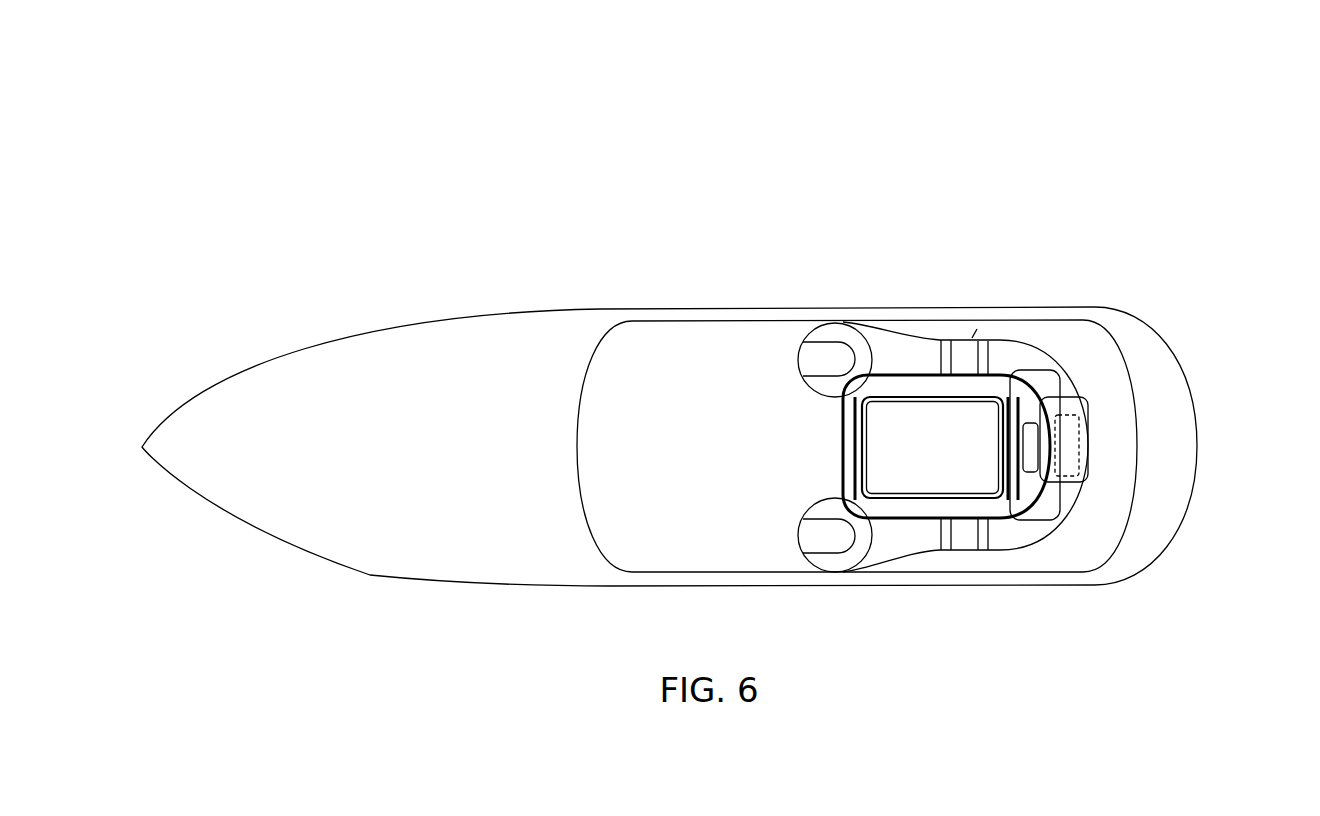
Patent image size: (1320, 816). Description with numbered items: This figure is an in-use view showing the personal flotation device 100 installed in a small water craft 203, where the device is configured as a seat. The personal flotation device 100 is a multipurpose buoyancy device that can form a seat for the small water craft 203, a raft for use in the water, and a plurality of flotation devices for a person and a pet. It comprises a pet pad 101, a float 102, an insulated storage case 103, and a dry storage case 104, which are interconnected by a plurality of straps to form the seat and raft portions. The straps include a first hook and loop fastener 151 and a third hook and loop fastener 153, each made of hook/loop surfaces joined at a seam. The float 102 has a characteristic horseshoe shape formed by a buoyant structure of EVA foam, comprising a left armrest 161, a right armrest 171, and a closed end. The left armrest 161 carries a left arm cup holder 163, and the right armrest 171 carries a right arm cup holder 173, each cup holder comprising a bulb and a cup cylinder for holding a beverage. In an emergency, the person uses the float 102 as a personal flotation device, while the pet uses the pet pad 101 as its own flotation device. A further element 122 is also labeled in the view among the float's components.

The personal flotation device 100 is at (422, 186).
The small water craft 203 is at (575, 337).
The pet pad 101 is at (1078, 348).
The float 102 is at (1072, 392).
The insulated storage case 103 is at (840, 450).
The dry storage case 104 is at (1085, 443).
The pod enclosure 122 is at (1058, 488).
The first hook and loop fastener 151 is at (962, 545).
The third hook and loop fastener 153 is at (962, 350).
The left armrest 161 is at (908, 540).
The left arm cup holder 163 is at (840, 575).
The right armrest 171 is at (907, 347).
The right arm cup holder 173 is at (837, 333).